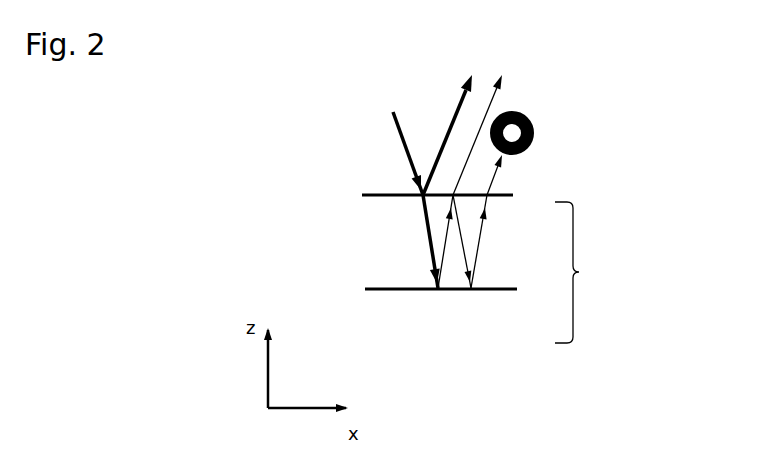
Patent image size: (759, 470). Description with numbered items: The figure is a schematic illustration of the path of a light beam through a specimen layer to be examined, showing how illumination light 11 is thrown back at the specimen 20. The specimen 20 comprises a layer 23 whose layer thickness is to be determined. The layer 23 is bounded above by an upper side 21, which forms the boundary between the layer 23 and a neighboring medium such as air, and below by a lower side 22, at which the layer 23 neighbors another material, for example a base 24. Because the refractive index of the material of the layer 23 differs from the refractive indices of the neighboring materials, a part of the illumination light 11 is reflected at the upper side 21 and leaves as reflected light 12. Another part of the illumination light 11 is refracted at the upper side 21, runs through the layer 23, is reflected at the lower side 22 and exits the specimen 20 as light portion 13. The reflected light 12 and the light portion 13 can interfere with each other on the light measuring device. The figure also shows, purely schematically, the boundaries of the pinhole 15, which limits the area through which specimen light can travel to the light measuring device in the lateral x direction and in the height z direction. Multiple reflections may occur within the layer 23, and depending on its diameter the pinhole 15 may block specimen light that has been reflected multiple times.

The illumination light 11 is at (389, 125).
The reflected light 12 is at (458, 99).
The light portion 13 is at (504, 94).
The pinhole 15 is at (534, 123).
The specimen 20 is at (579, 272).
The upper side 21 is at (377, 194).
The lower side 22 is at (375, 287).
The layer 23 is at (530, 257).
The base 24 is at (524, 336).